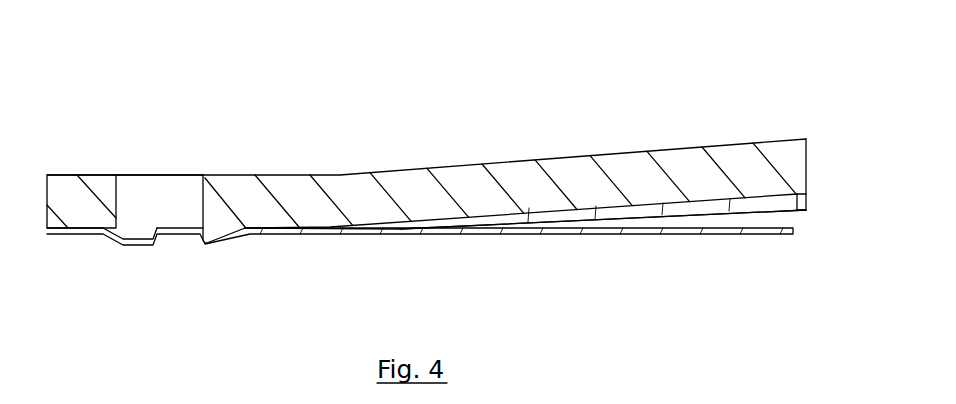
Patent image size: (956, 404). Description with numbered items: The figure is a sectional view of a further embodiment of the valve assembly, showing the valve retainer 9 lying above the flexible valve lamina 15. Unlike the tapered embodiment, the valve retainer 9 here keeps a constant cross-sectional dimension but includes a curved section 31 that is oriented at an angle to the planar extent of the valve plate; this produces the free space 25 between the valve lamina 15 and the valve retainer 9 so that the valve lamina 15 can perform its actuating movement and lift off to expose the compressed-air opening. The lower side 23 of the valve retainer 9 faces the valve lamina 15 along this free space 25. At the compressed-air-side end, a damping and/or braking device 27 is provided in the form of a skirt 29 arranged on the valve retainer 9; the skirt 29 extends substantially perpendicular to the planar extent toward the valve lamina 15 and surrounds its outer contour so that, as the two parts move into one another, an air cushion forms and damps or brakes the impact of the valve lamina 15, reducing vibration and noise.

The valve retainer 9 is at (410, 190).
The curved section 31 is at (575, 173).
The lower side 23 is at (662, 205).
The damping and/or braking device 27 is at (806, 166).
The skirt 29 is at (803, 209).
The valve lamina 15 is at (582, 235).
The free space 25 is at (743, 224).